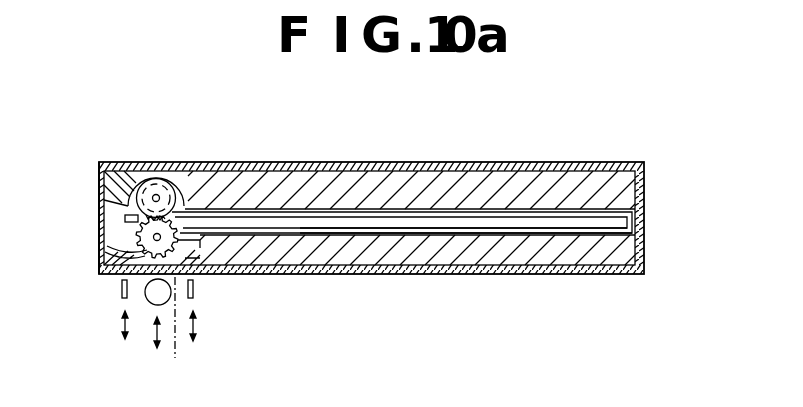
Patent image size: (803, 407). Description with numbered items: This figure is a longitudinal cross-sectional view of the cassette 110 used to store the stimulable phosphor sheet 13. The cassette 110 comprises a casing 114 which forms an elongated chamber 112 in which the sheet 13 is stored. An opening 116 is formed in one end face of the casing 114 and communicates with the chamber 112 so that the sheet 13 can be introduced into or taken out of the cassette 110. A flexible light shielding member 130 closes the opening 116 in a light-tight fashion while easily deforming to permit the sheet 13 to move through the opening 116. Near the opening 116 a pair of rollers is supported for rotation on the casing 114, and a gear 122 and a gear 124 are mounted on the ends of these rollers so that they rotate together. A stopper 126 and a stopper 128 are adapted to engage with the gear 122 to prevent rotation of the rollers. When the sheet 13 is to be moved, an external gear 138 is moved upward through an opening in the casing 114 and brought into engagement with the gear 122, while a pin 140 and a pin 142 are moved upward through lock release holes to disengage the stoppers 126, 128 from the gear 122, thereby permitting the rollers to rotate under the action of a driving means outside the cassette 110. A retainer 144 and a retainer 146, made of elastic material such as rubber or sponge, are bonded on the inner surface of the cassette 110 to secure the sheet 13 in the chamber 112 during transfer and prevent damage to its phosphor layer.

The cassette 110 is at (452, 144).
The chamber 112 is at (608, 215).
The casing 114 is at (557, 170).
The opening 116 is at (88, 191).
The gear 122 is at (185, 333).
The gear 124 is at (163, 163).
The stopper 126 is at (101, 260).
The stopper 128 is at (205, 252).
The flexible light shielding member 130 is at (98, 212).
The gear 138 is at (148, 302).
The pin 140 is at (121, 293).
The pin 142 is at (193, 303).
The retainer 144 is at (432, 270).
The retainer 146 is at (331, 182).
The sheet 13 is at (582, 223).